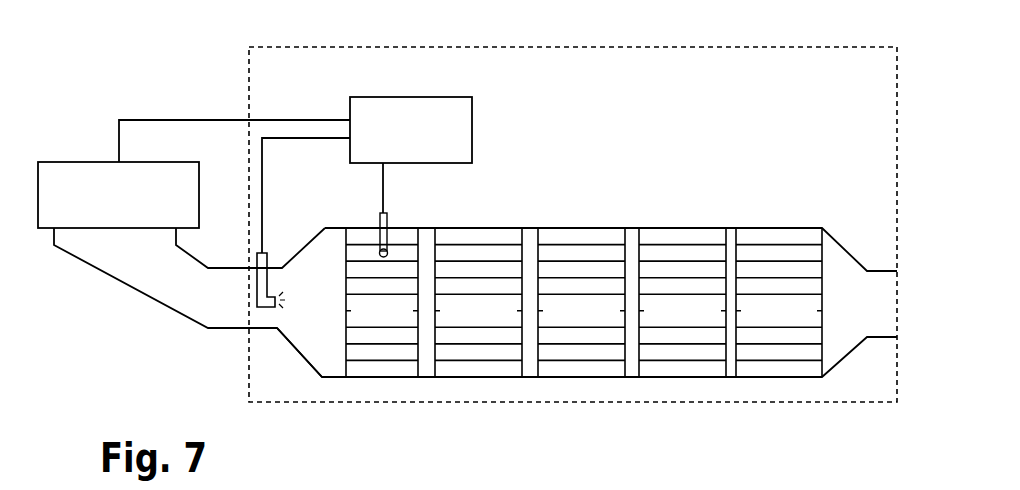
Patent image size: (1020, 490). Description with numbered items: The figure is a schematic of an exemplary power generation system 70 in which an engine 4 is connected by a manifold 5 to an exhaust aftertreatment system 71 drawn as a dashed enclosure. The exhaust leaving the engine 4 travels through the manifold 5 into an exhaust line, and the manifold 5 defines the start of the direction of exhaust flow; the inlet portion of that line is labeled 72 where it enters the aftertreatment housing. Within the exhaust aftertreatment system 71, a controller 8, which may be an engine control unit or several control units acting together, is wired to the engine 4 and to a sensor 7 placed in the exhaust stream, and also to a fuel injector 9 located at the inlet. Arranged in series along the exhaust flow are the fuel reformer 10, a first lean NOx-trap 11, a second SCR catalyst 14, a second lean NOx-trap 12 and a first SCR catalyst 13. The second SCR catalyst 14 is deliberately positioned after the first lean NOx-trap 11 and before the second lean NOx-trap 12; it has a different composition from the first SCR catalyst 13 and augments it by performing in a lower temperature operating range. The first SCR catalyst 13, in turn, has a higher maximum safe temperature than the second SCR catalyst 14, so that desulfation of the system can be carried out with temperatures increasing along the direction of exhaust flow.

The exhaust system arrangement 70 is at (169, 41).
The exhaust aftertreatment system 71 is at (820, 63).
The engine 4 is at (115, 170).
The manifold 5 is at (172, 297).
The exhaust inlet 72 is at (320, 356).
The controller 8 is at (463, 118).
The temperature sensor 7 is at (379, 222).
The fuel injector 9 is at (263, 253).
The fuel reformer 10 is at (395, 237).
The first lean NOx-trap 11 is at (478, 237).
The second SCR catalyst 14 is at (587, 237).
The second lean NOx-trap 12 is at (678, 237).
The first SCR catalyst 13 is at (772, 237).